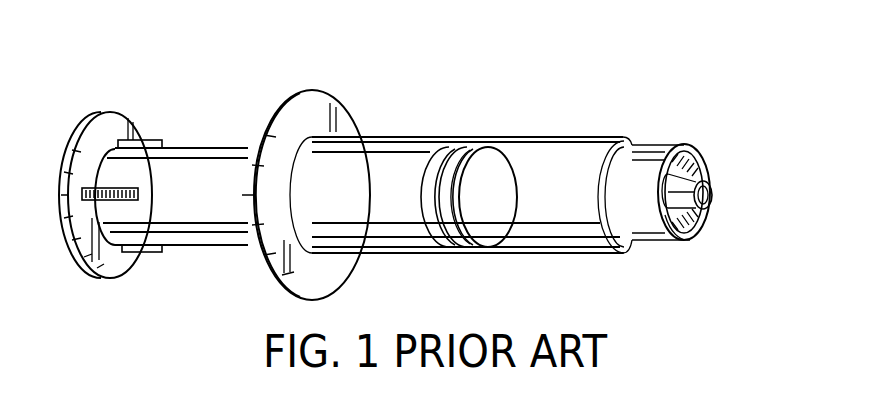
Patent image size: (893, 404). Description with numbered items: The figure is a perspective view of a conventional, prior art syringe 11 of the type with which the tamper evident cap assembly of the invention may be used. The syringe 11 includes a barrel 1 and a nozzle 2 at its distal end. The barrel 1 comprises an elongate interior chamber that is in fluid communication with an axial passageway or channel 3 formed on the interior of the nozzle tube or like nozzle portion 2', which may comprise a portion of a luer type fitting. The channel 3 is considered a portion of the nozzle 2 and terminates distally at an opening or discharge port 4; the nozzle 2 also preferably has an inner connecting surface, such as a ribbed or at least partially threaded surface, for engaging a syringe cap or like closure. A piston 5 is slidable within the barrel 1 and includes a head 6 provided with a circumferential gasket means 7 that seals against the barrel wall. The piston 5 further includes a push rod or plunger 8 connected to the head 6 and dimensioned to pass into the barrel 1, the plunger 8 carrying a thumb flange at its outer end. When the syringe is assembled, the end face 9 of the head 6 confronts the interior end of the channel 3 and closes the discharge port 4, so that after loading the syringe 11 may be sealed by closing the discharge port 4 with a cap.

The barrel 1 is at (529, 132).
The nozzle 2 is at (671, 152).
The nozzle tube 2' is at (691, 256).
The channel 3 is at (704, 188).
The discharge port 4 is at (708, 205).
The piston 5 is at (195, 135).
The head 6 is at (471, 142).
The circumferential gasket means 7 is at (455, 142).
The plunger 8 is at (184, 201).
The end face 9 is at (495, 214).
The syringe 11 is at (414, 92).